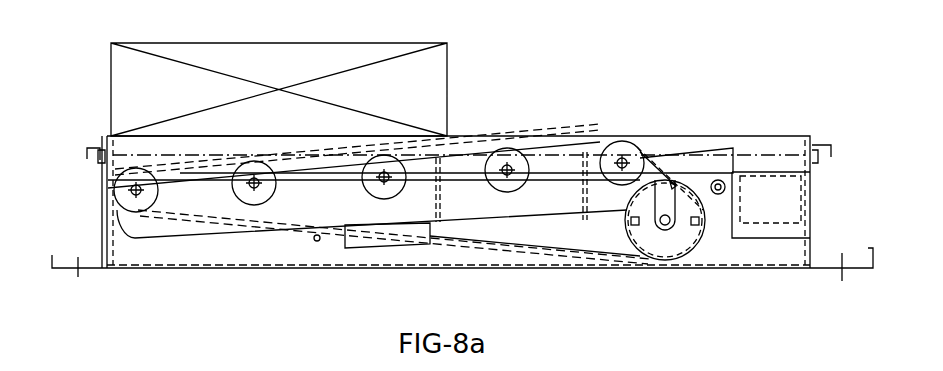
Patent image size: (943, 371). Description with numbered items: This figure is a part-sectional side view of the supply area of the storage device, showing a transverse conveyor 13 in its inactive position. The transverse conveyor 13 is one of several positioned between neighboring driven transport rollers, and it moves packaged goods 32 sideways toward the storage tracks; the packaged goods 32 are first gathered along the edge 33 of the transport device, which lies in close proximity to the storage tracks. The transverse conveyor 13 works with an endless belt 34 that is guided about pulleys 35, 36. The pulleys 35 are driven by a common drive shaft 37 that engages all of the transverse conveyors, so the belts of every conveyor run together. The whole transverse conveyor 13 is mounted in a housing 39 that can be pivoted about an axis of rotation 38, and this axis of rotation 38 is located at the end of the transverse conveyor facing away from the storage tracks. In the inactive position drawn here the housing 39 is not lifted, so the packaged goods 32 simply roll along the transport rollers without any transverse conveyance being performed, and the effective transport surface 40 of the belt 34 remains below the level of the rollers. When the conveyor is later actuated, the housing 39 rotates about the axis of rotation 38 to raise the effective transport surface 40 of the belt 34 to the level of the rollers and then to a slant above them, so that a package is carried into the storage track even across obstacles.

The transverse conveyor 13 is at (691, 124).
The packaged goods 32 is at (126, 77).
The edge 33 is at (105, 137).
The endless belt 34 is at (536, 248).
The pulley 35 is at (686, 238).
The pulley 36 is at (616, 150).
The drive shaft 37 is at (665, 228).
The axis of rotation 38 is at (733, 172).
The housing 39 is at (168, 243).
The effective transport surface 40 is at (468, 150).